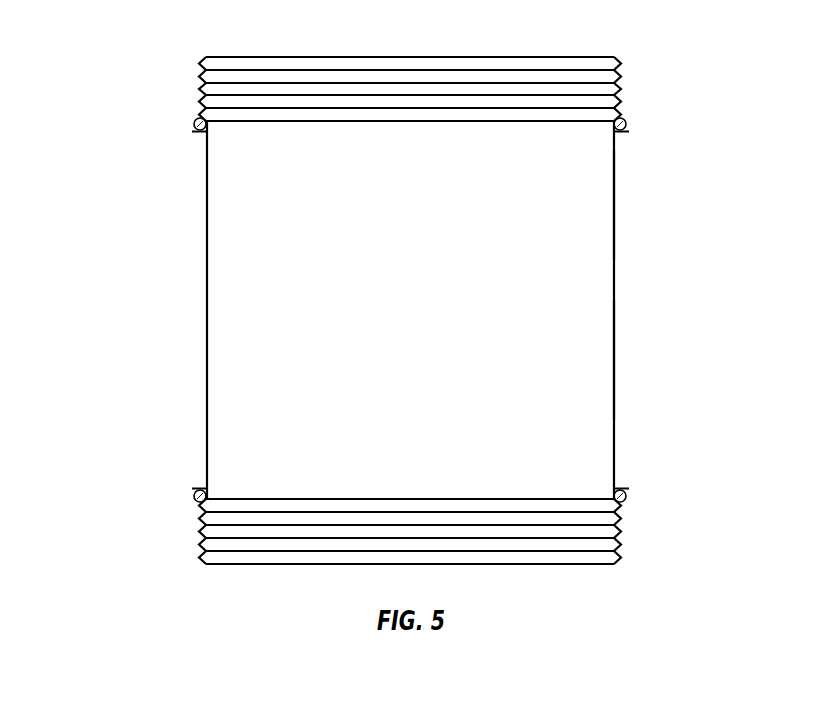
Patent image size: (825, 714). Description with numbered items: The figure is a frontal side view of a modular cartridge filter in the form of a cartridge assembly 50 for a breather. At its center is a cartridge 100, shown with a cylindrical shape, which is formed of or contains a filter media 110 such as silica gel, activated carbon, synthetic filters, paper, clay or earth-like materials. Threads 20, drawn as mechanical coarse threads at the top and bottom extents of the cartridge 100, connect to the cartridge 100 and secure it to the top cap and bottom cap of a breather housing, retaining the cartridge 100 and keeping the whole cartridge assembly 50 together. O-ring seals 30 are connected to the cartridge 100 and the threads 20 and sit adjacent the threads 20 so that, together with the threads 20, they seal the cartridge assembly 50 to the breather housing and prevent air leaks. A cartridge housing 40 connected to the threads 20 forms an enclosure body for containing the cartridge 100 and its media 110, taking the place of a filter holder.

The threads 20 is at (614, 57).
The o-ring seals 30 is at (194, 123).
The cartridge housing 40 is at (207, 310).
The cartridge assembly 50 is at (700, 40).
The cartridge 100 is at (614, 187).
The filter media 110 is at (575, 342).